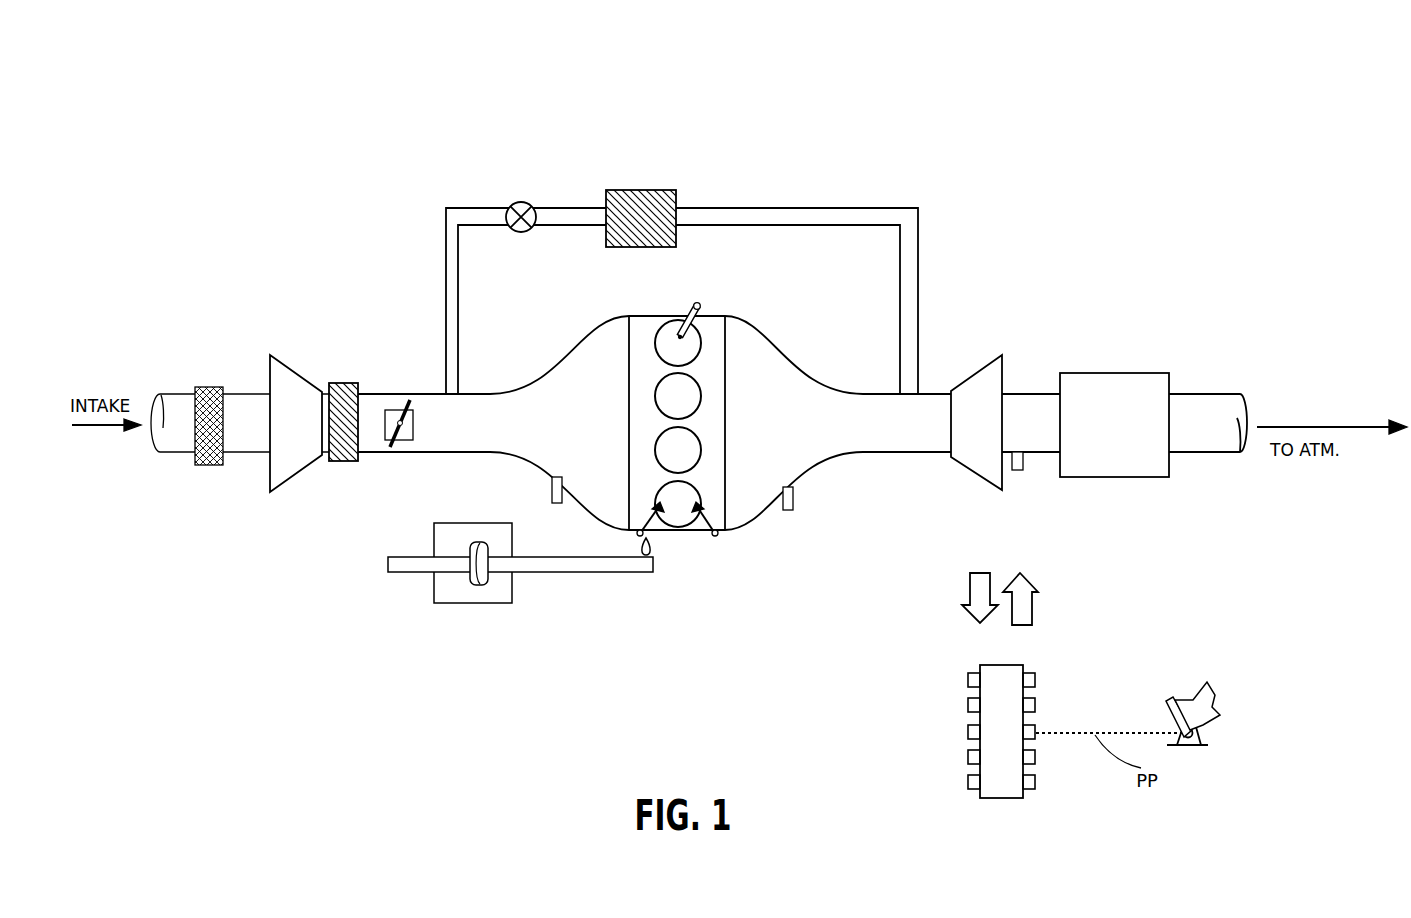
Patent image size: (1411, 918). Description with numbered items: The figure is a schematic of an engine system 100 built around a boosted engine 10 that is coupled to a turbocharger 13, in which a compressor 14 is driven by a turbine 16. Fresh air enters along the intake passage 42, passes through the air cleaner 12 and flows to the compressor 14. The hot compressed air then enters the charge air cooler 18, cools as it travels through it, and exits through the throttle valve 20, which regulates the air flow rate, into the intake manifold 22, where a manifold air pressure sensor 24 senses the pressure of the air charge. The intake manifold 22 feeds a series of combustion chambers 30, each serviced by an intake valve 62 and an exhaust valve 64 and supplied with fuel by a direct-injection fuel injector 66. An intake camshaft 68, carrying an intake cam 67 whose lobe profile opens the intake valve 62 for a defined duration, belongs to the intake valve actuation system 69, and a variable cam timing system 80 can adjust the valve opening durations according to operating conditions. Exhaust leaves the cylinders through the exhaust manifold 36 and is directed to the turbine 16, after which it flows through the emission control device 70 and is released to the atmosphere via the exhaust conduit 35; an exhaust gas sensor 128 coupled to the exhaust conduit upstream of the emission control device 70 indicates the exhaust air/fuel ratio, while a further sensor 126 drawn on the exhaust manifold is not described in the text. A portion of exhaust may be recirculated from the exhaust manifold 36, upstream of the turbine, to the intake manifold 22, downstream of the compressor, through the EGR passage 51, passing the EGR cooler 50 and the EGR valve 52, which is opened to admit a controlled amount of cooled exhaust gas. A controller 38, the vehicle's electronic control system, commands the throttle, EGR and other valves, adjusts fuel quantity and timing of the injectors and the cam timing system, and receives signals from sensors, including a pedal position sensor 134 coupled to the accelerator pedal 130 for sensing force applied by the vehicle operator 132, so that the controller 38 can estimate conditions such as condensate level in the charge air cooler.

The engine system 100 is at (1316, 94).
The engine 10 is at (693, 423).
The air cleaner 12 is at (206, 387).
The turbocharger 13 is at (314, 339).
The compressor 14 is at (296, 423).
The turbine 16 is at (976, 422).
The charge air cooler 18 is at (345, 383).
The throttle valve 20 is at (413, 426).
The intake manifold 22 is at (493, 423).
The manifold air pressure sensor 24 is at (552, 491).
The combustion chamber 30 is at (700, 337).
The exhaust conduit 35 is at (1222, 394).
The exhaust manifold 36 is at (838, 423).
The controller 38 is at (1001, 731).
The intake passage 42 is at (185, 453).
The EGR cooler 50 is at (652, 190).
The EGR passage 51 is at (790, 208).
The EGR valve 52 is at (530, 203).
The intake valve 62 is at (650, 515).
The exhaust valve 64 is at (706, 515).
The fuel injector 66 is at (684, 317).
The intake cam 67 is at (651, 549).
The intake camshaft 68 is at (570, 572).
The intake valve actuation system 69 is at (416, 517).
The emission control device 70 is at (1100, 373).
The variable cam timing system 80 is at (452, 523).
The exhaust sensor 126 is at (793, 493).
The exhaust gas sensor 128 is at (1016, 470).
The accelerator pedal 130 is at (1165, 705).
The vehicle operator 132 is at (1215, 695).
The pedal position sensor 134 is at (1200, 733).